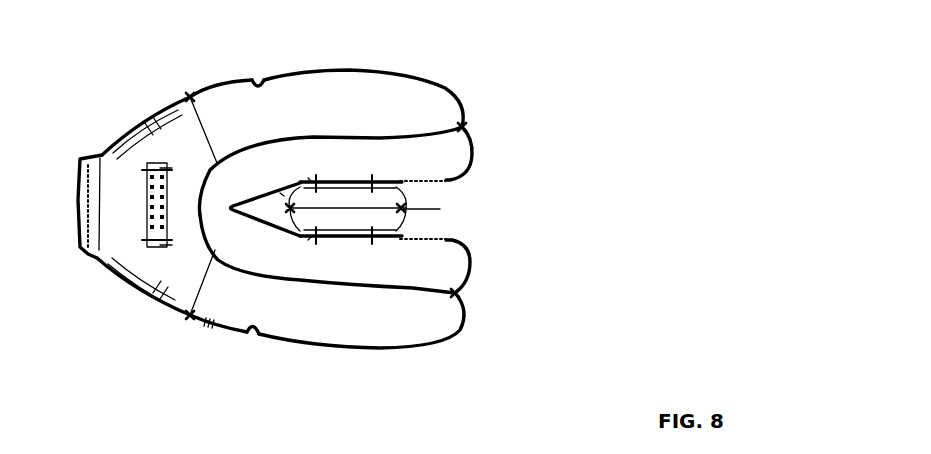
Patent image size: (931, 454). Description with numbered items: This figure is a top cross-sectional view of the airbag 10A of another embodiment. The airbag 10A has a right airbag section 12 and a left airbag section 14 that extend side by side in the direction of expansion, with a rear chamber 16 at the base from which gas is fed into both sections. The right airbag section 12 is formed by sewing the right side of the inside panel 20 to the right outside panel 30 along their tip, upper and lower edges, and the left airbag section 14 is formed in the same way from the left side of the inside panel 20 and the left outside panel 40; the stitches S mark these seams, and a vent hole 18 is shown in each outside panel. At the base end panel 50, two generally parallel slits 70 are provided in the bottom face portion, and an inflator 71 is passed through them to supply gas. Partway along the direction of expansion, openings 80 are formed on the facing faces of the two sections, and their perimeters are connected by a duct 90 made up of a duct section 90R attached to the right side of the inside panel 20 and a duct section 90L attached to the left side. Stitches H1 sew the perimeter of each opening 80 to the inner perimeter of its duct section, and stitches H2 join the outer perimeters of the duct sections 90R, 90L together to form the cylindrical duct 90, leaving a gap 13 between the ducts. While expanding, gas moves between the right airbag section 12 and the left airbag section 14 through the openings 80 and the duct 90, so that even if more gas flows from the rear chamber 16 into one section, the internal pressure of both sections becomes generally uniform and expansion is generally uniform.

The airbag 10A is at (508, 117).
The right airbag section 12 is at (448, 74).
The gap between ducts 13 is at (449, 229).
The left airbag section 14 is at (490, 283).
The rear chamber 16 is at (119, 150).
The vent hole 18 is at (265, 372).
The inside panel 20 is at (474, 153).
The right outside panel 30 is at (356, 70).
The left outside panel 40 is at (428, 346).
The base end panel 50 is at (130, 292).
The slits 70 is at (165, 170).
The inflator 71 is at (147, 213).
The openings 80 is at (354, 178).
The duct 90 is at (533, 176).
The duct section 90R is at (396, 207).
The duct section 90L is at (400, 226).
The stitches H1 is at (310, 178).
The stitches H2 is at (280, 194).
The stitches S is at (80, 167).